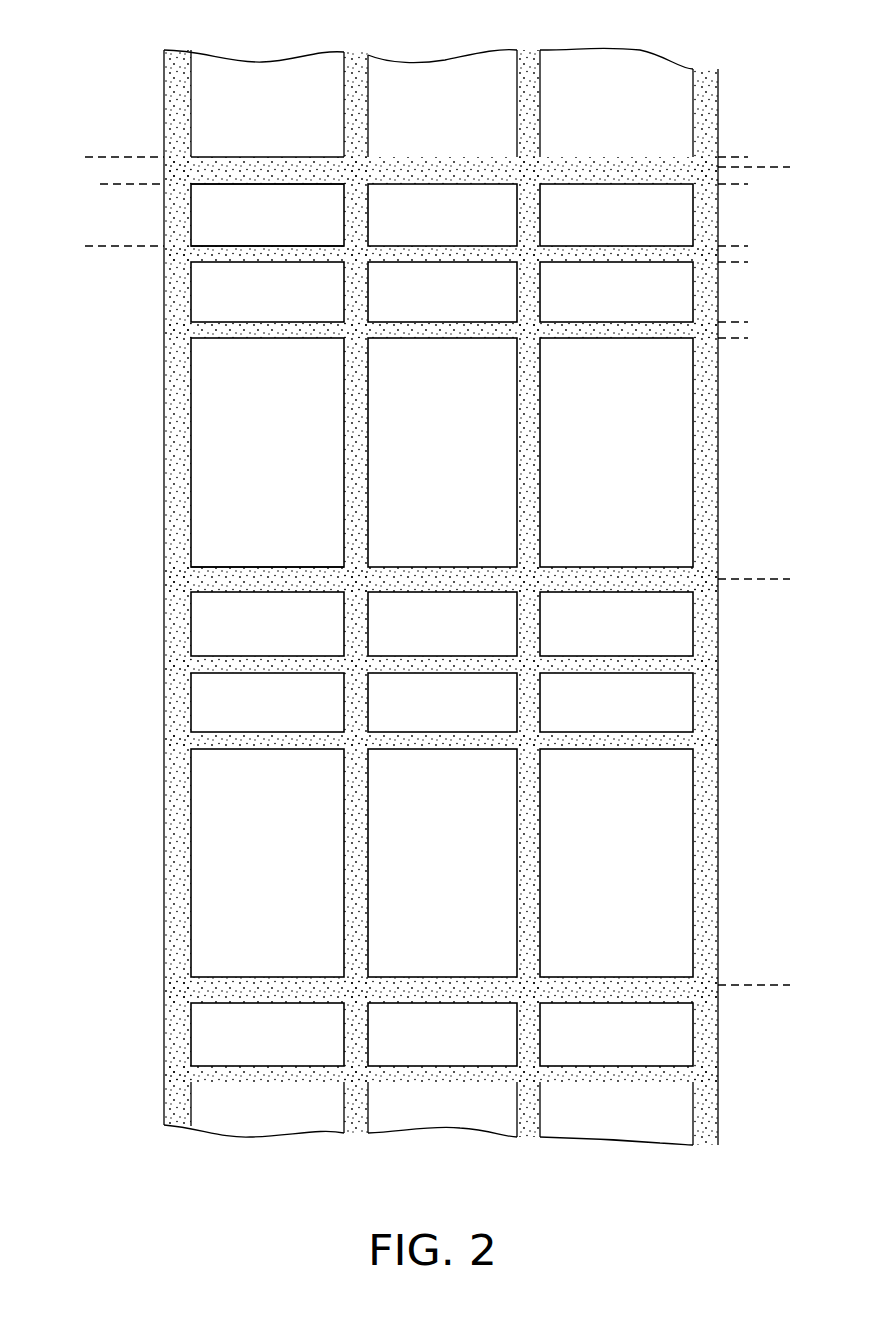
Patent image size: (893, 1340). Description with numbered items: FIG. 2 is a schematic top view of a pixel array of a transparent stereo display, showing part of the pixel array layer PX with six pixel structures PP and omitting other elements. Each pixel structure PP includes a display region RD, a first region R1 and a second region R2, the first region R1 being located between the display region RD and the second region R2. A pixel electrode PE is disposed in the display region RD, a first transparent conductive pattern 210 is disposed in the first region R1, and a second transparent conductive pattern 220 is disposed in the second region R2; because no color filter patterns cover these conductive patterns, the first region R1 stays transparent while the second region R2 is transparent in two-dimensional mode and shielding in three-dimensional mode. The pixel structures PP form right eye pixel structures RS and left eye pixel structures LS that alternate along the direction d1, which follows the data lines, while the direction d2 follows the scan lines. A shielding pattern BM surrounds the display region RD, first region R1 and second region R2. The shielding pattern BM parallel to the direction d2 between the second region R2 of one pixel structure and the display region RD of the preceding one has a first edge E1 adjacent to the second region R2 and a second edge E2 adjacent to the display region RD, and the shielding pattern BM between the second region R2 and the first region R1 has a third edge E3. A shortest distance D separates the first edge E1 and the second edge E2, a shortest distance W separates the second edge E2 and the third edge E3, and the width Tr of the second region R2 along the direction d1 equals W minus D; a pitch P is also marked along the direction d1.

The shielding pattern BM is at (182, 608).
The first edge E1 is at (274, 182).
The second edge E2 is at (301, 155).
The third edge E3 is at (323, 251).
The second transparent conductive pattern 220 is at (192, 216).
The first transparent conductive pattern 210 is at (178, 292).
The pixel electrode PE is at (176, 434).
The pixel structure PP is at (62, 273).
The shortest distance W is at (88, 157).
The shortest distance D is at (128, 157).
The width of the second region Tr is at (128, 184).
The pitch P is at (152, 184).
The display region RD is at (737, 157).
The first region R1 is at (737, 262).
The second region R2 is at (737, 184).
The left eye pixel structure LS is at (779, 1140).
The right eye pixel structure RS is at (806, 714).
The pixel array layer PX is at (798, 1193).
The direction d1 is at (103, 1197).
The direction d2 is at (103, 1197).